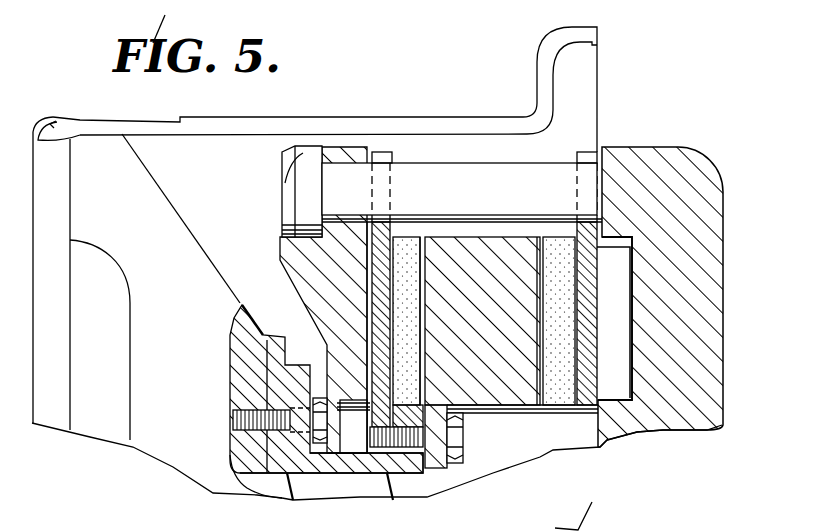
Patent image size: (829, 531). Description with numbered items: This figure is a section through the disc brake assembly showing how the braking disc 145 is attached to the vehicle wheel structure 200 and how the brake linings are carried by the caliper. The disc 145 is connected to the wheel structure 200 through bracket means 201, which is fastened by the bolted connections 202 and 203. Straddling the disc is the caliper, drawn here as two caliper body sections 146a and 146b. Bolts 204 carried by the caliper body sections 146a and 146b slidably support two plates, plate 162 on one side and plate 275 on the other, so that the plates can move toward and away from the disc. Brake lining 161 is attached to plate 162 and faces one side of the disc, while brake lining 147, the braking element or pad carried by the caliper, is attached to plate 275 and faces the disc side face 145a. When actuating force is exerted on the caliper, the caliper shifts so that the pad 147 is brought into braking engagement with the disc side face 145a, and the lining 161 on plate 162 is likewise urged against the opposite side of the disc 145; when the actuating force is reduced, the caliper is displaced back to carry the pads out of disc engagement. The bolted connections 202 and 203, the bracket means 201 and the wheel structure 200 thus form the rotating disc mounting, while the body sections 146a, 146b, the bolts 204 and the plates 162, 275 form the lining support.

The caliper body section 146a is at (706, 323).
The caliper body section 146b is at (280, 240).
The braking element or pad 147 is at (407, 270).
The braking disc 145 is at (480, 321).
The disc side face 145a is at (413, 380).
The pad 161 is at (548, 252).
The plate 162 is at (587, 285).
The wheel structure 200 is at (236, 366).
The bracket means 201 is at (360, 482).
The bolted connection 202 is at (403, 472).
The bolted connection 203 is at (267, 450).
The bolt 204 is at (442, 191).
The plate 275 is at (377, 290).